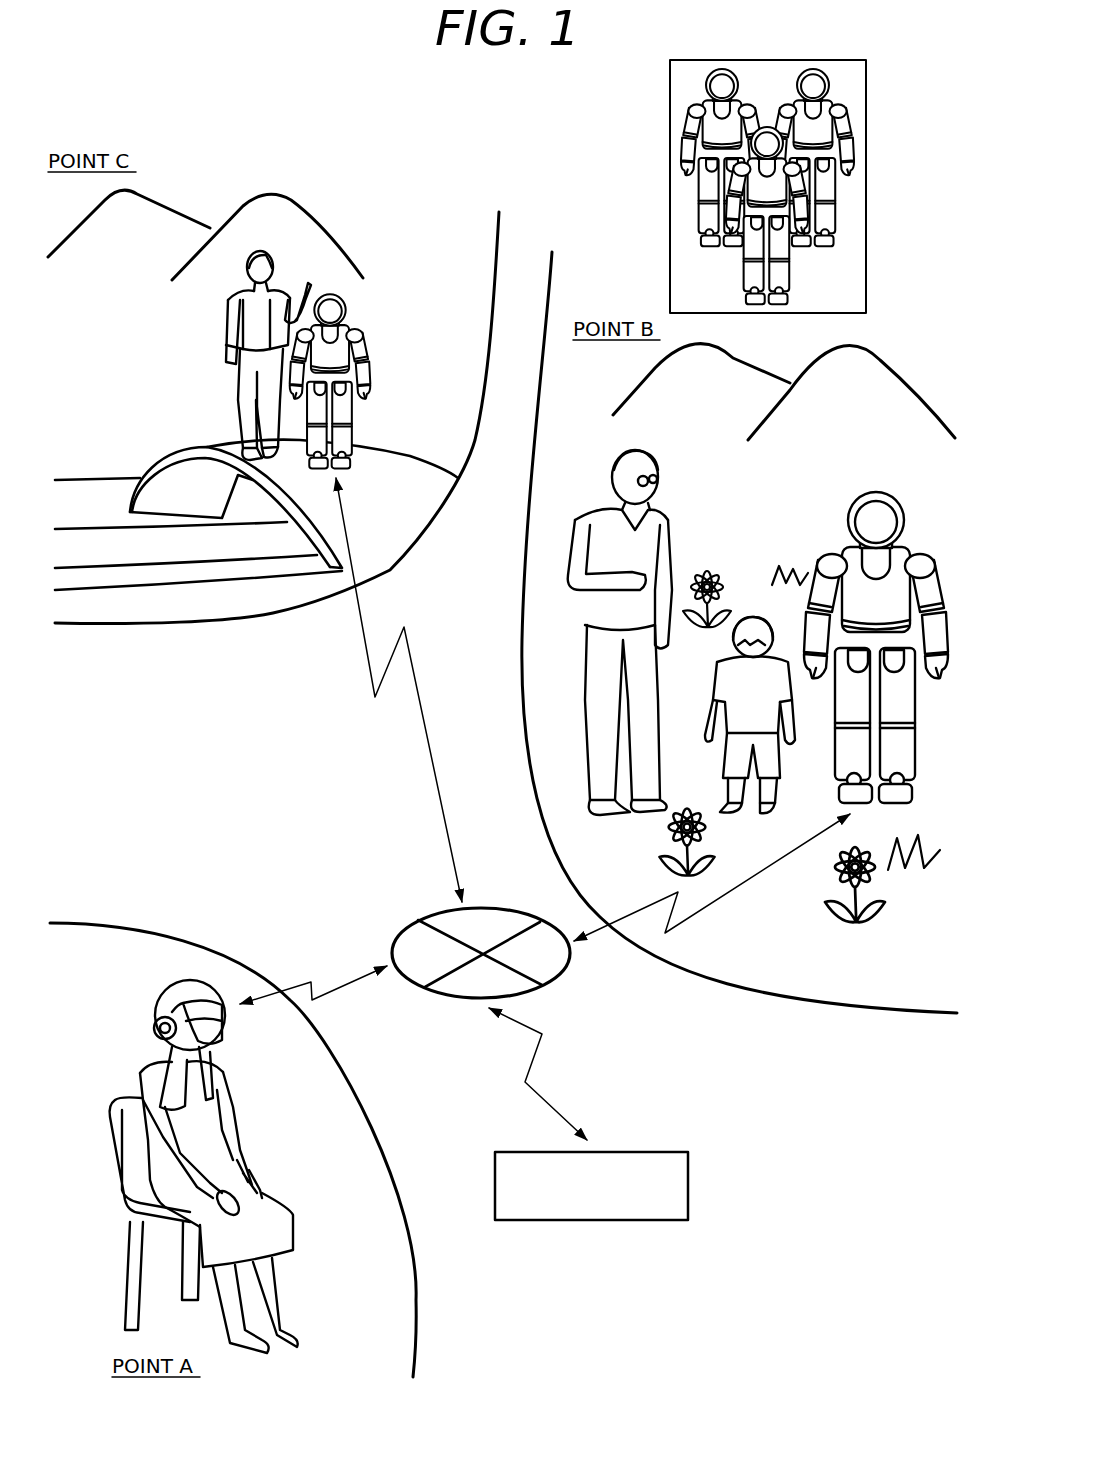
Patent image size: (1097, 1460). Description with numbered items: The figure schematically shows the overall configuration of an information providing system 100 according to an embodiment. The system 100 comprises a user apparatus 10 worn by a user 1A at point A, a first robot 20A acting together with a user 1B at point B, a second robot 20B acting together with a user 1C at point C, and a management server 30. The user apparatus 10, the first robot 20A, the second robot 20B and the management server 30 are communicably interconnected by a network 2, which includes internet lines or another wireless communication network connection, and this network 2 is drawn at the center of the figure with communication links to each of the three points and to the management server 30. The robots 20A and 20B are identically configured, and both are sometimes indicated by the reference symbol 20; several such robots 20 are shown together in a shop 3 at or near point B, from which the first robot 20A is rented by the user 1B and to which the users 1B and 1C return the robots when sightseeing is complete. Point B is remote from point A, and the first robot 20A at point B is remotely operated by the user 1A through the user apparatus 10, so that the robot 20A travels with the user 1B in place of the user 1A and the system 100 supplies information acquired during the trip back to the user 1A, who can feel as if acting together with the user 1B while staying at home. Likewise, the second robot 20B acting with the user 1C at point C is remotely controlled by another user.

The information providing system 100 is at (530, 158).
The user 1A is at (140, 1088).
The user 1B is at (753, 615).
The user 1C is at (222, 318).
The network 2 is at (402, 930).
The shop 3 is at (866, 212).
The user apparatus 10 is at (154, 1017).
The robot 20 is at (848, 118).
The first robot 20A is at (912, 548).
The second robot 20B is at (355, 330).
The management server 30 is at (688, 1170).